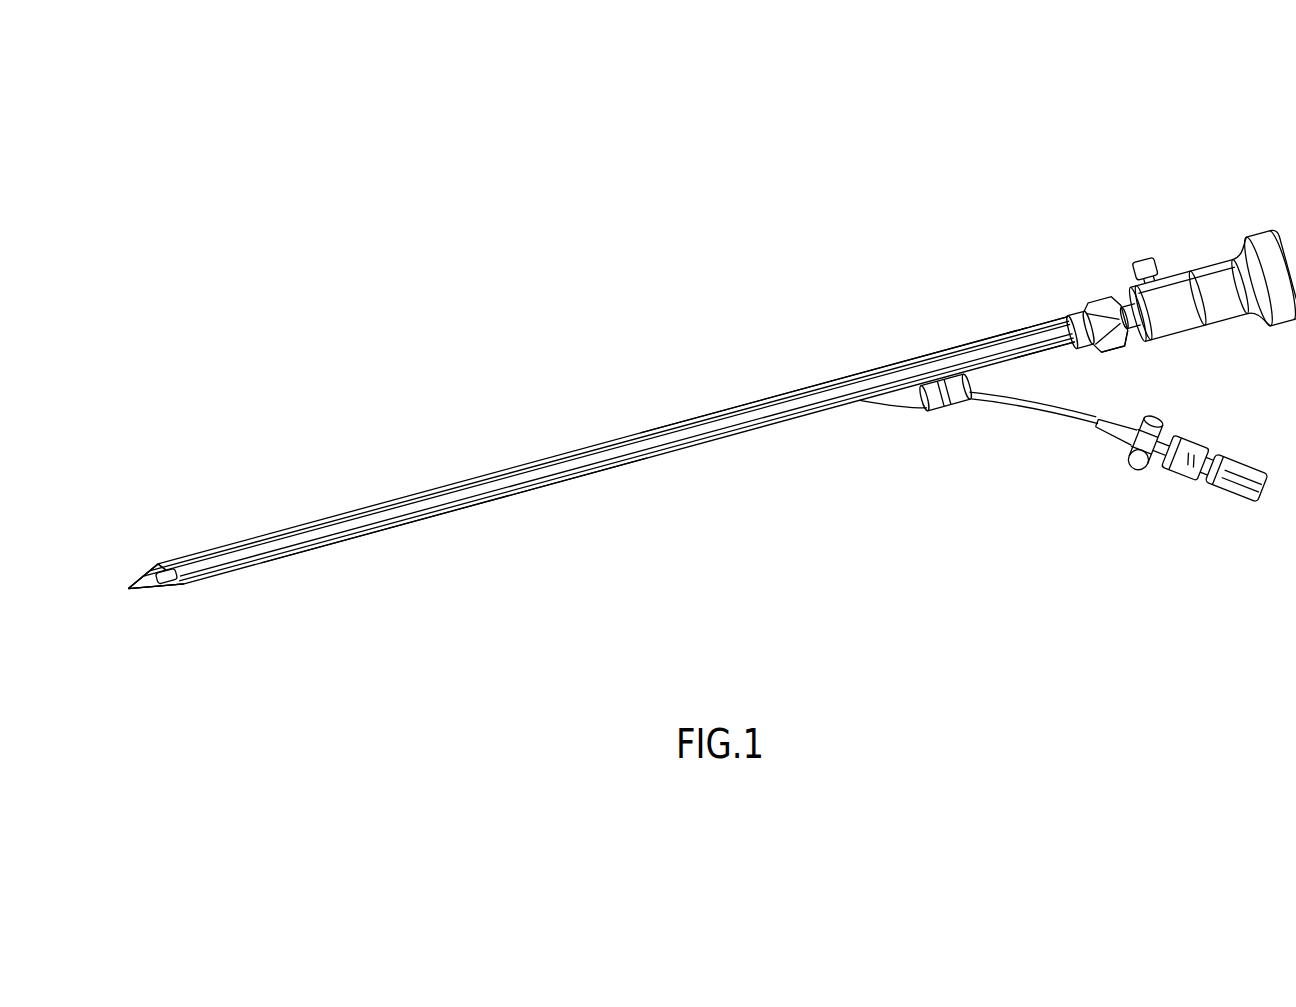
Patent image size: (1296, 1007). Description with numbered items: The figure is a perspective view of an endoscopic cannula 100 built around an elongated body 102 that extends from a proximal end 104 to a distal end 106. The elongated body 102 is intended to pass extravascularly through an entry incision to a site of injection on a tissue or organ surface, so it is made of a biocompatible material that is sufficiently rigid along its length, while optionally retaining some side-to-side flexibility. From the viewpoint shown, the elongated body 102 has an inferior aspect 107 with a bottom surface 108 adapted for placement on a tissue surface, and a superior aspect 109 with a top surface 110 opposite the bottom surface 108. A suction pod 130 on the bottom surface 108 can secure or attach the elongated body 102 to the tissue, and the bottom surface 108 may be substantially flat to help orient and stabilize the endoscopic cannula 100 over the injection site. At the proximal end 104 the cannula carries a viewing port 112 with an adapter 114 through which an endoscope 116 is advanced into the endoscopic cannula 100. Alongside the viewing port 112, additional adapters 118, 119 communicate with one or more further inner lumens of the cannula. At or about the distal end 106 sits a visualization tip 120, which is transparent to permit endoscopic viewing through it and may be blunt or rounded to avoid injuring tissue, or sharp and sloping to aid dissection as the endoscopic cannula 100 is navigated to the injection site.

The endoscopic cannula 100 is at (678, 441).
The elongated body 102 is at (466, 503).
The proximal end 104 is at (1050, 325).
The distal end 106 is at (172, 566).
The inferior aspect 107 is at (306, 553).
The bottom surface 108 is at (367, 532).
The superior aspect 109 is at (768, 411).
The top surface 110 is at (402, 496).
The viewing port 112 is at (1117, 303).
The adapter 114 is at (1118, 346).
The endoscope 116 is at (1225, 287).
The adapter 118 is at (1203, 470).
The adapter 119 is at (937, 402).
The visualization tip 120 is at (131, 580).
The suction pod 130 is at (167, 586).